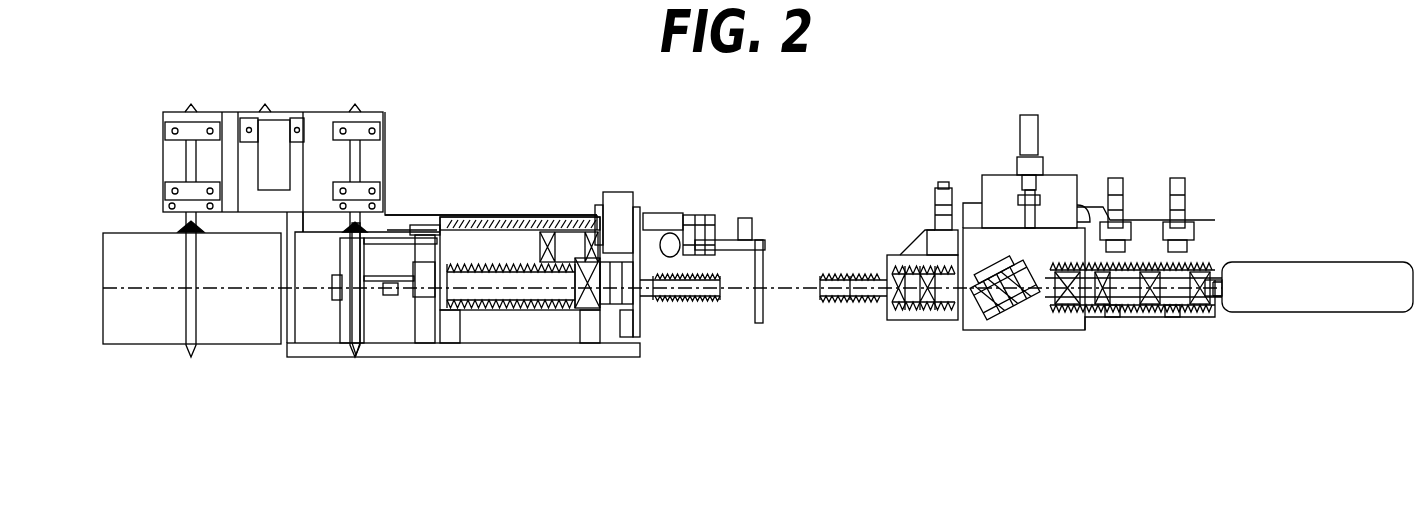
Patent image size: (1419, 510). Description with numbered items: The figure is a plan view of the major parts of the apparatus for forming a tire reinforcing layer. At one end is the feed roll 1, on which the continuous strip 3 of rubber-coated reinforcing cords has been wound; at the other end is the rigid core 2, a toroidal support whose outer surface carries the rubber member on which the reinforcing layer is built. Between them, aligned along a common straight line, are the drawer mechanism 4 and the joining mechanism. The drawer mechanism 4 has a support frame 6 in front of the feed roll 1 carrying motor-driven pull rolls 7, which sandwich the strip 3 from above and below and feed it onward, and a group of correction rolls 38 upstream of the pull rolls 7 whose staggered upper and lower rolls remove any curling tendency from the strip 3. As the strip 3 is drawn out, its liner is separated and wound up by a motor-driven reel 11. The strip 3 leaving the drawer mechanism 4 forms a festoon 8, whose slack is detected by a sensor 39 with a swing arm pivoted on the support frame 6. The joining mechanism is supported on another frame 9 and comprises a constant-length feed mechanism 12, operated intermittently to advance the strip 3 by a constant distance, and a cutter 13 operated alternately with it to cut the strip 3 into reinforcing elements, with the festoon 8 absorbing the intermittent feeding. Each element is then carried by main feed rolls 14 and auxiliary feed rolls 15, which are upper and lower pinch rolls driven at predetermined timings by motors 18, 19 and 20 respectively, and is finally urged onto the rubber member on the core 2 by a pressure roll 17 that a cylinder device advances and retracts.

The feed roll 1 is at (150, 320).
The rigid core 2 is at (1337, 313).
The continuous strip 3 is at (267, 292).
The drawer mechanism 4 is at (545, 210).
The support frame 6 is at (632, 343).
The pull rolls 7 is at (598, 318).
The festoon 8 is at (797, 290).
The frame 9 is at (1100, 330).
The reel 11 is at (392, 325).
The constant-length feed mechanism 12 is at (929, 325).
The cutter 13 is at (1013, 330).
The main feed rolls 14 is at (1120, 320).
The auxiliary feed rolls 15 is at (1180, 320).
The pressure roll 17 is at (1215, 305).
The motor 18 is at (944, 190).
The motor 19 is at (1116, 176).
The motor 20 is at (1176, 176).
The correction rolls 38 is at (500, 296).
The sensor 39 is at (750, 198).